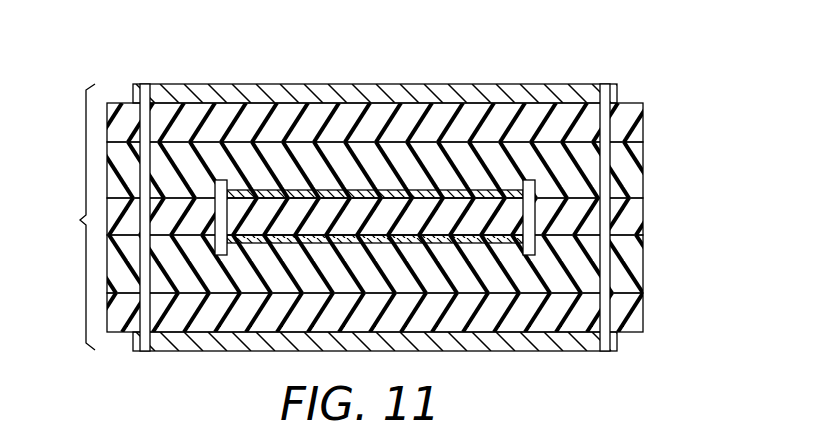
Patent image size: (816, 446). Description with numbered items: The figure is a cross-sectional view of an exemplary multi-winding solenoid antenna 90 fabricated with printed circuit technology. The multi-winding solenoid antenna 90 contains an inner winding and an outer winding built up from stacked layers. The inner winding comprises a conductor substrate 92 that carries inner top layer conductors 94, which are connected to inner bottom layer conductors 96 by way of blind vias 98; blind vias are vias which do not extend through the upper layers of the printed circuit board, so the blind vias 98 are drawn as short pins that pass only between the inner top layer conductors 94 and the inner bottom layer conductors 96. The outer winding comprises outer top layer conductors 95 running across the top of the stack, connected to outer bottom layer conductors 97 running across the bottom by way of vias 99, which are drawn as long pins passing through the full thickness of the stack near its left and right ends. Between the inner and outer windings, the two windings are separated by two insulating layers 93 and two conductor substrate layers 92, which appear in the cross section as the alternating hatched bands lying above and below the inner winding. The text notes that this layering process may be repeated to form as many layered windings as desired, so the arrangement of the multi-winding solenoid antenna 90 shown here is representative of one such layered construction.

The multi-winding solenoid antenna 90 is at (67, 217).
The conductor substrate 92 is at (633, 120).
The insulating layer 93 is at (632, 167).
The inner top layer conductors 94 is at (301, 190).
The outer top layer conductors 95 is at (462, 96).
The inner bottom layer conductors 96 is at (366, 236).
The outer bottom layer conductors 97 is at (553, 343).
The blind vias 98 is at (222, 180).
The vias 99 is at (145, 84).